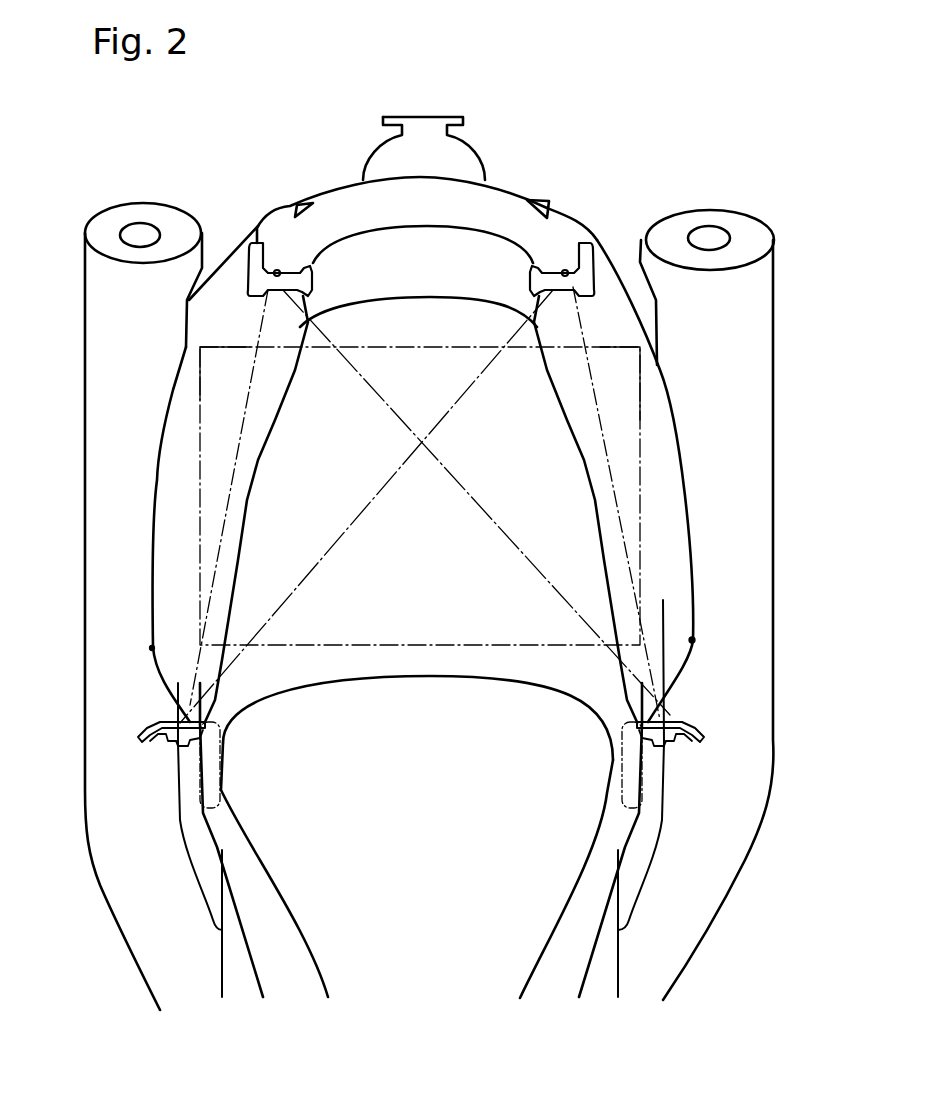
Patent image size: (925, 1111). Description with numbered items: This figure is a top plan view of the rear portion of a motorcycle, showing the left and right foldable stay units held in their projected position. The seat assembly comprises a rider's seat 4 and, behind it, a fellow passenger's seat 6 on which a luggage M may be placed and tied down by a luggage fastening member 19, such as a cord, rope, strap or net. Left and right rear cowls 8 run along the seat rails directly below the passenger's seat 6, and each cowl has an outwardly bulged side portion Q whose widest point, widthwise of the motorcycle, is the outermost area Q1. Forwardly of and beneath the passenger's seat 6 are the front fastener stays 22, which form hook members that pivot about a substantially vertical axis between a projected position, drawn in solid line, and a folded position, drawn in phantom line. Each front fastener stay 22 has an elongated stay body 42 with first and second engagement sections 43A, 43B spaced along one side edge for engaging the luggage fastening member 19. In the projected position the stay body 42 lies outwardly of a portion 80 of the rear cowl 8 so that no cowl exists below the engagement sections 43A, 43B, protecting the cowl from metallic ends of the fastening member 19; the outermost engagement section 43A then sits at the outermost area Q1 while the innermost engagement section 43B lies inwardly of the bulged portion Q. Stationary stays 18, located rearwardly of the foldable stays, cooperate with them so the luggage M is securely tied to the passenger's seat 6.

The rider's seat 4 is at (297, 875).
The fellow passenger's seat 6 is at (438, 313).
The rear cowl 8 is at (177, 490).
The stationary stay 18 is at (262, 255).
The luggage fastening member 19 is at (243, 410).
The front fastener stay 22 is at (160, 723).
The elongated stay body 42 is at (147, 730).
The first engagement section 43A is at (167, 740).
The second engagement section 43B is at (197, 740).
The portion of the rear cowl 80 is at (207, 748).
The luggage M is at (200, 383).
The outwardly bulged side portion Q is at (153, 530).
The outermost area of the outwardly bulged side portion Q1 is at (152, 648).